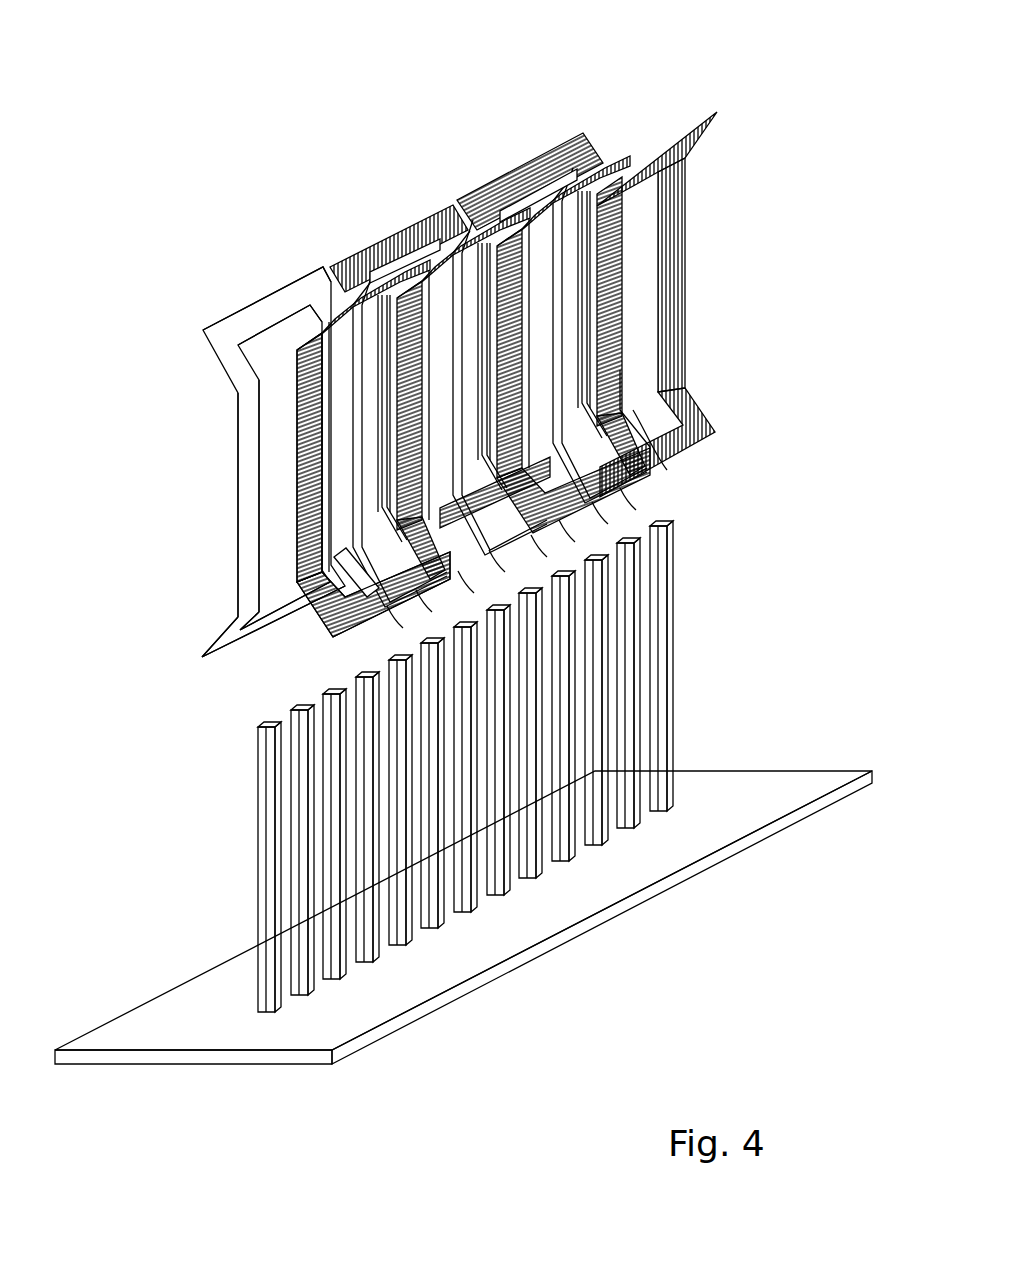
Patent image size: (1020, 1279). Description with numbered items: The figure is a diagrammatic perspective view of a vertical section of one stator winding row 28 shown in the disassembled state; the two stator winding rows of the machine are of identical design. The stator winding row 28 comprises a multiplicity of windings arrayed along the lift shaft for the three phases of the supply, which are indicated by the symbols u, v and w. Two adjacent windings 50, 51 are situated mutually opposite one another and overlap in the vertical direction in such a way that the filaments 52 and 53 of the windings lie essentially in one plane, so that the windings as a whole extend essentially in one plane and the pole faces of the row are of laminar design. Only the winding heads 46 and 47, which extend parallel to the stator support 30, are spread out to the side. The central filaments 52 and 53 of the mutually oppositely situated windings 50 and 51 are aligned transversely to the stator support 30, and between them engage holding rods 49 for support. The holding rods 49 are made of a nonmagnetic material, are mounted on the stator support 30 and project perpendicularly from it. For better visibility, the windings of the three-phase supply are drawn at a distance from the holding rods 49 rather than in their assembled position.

The stator winding row 28 is at (630, 128).
The stator support 30 is at (132, 1030).
The winding head 46 is at (230, 336).
The winding head 47 is at (230, 637).
The holding rods 49 is at (258, 815).
The winding 50 is at (260, 288).
The winding 51 is at (312, 634).
The filament 52 is at (245, 488).
The filament 53 is at (305, 515).